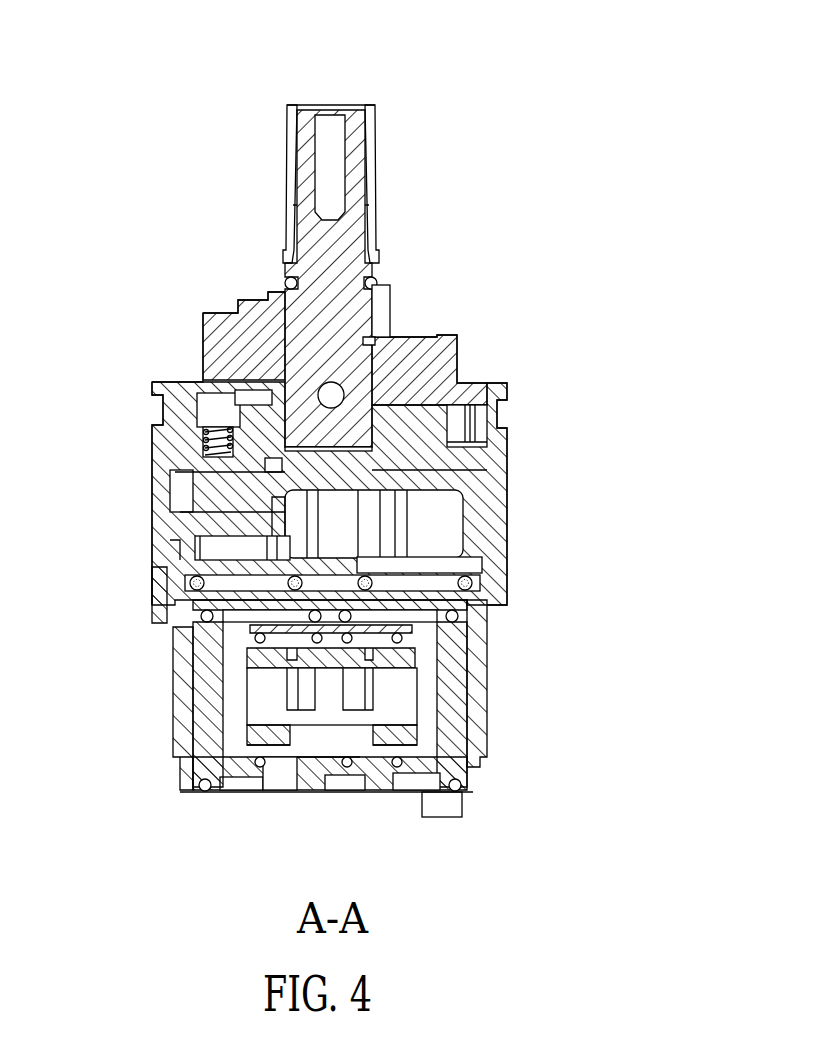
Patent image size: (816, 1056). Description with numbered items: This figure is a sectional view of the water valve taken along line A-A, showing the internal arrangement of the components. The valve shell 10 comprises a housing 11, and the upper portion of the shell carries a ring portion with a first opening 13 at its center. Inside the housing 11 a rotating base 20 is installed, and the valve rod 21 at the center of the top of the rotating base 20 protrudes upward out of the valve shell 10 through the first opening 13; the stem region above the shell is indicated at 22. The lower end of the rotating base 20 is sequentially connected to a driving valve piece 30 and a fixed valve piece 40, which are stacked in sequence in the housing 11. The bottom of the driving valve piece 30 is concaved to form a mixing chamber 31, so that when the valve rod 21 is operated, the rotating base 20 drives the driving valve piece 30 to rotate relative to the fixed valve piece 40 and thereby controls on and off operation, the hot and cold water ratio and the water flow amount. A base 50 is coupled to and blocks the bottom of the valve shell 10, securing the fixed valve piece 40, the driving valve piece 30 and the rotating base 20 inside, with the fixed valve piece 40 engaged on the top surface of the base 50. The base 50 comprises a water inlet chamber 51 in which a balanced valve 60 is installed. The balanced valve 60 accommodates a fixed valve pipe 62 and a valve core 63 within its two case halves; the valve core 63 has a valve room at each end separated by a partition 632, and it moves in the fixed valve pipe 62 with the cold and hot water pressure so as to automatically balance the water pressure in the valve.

The valve shell 10 is at (176, 379).
The housing 11 is at (442, 522).
The first opening 13 is at (385, 326).
The rotating base 20 is at (446, 416).
The valve rod 21 is at (350, 106).
The stem sleeve 22 is at (288, 175).
The driving valve piece 30 is at (243, 485).
The mixing chamber 31 is at (497, 585).
The fixed valve piece 40 is at (188, 557).
The base 50 is at (492, 678).
The water inlet chamber 51 is at (173, 713).
The balanced valve 60 is at (465, 745).
The fixed valve pipe 62 is at (267, 648).
The valve core 63 is at (257, 747).
The partition 632 is at (344, 792).